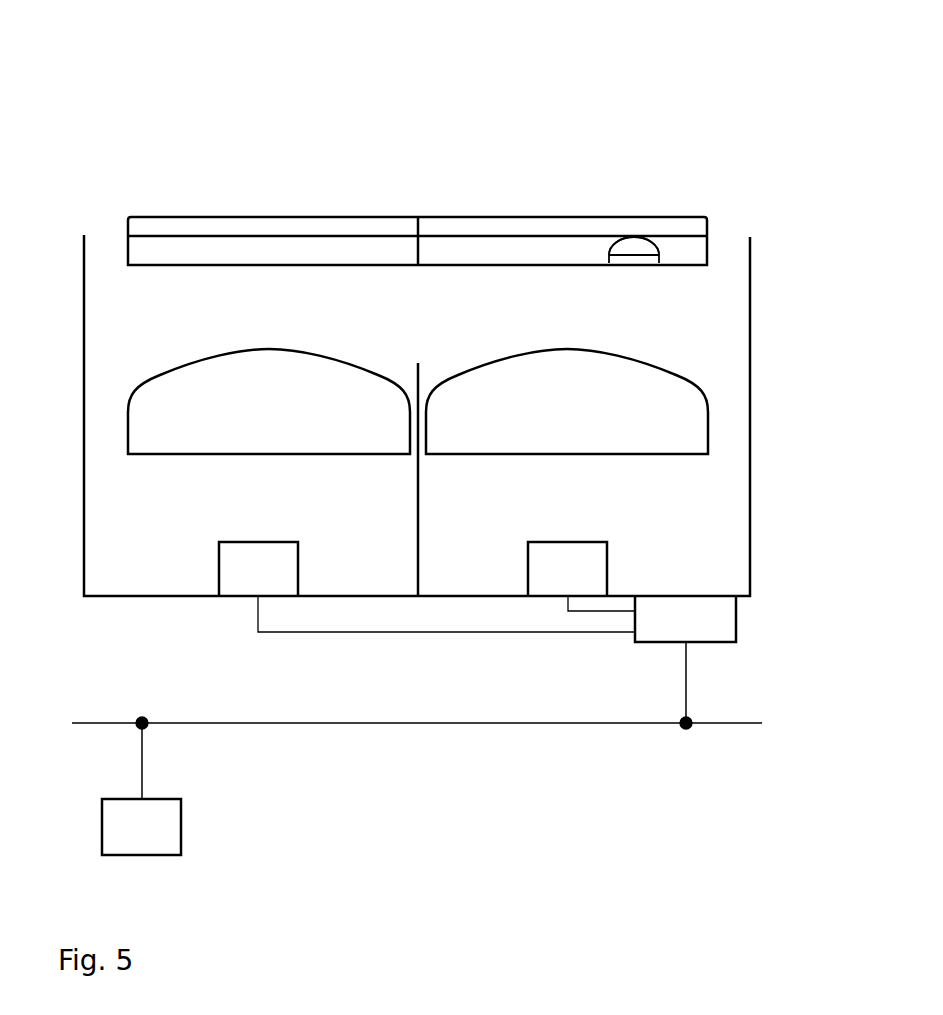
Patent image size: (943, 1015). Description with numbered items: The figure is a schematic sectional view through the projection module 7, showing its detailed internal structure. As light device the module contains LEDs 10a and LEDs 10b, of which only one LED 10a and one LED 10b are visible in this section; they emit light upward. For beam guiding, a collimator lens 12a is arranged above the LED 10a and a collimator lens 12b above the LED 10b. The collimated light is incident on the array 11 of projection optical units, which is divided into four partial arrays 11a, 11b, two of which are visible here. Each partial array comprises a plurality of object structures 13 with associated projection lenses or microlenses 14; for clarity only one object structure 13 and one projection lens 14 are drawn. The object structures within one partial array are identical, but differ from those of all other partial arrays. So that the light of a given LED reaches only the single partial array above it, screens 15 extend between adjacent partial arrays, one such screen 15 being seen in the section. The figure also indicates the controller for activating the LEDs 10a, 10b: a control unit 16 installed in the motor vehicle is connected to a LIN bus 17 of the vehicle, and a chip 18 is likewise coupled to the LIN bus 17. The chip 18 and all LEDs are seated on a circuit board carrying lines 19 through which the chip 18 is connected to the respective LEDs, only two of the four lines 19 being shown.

The projection module 7 is at (630, 106).
The LED 10a is at (219, 542).
The LED 10b is at (607, 542).
The array 11 is at (127, 250).
The partial array 11a is at (273, 217).
The partial array 11b is at (563, 217).
The collimator lens 12a is at (173, 363).
The collimator lens 12b is at (472, 365).
The object structure 13 is at (645, 263).
The projection lens 14 is at (657, 243).
The screen 15 is at (422, 527).
The control unit 16 is at (181, 830).
The LIN bus 17 is at (448, 724).
The chip 18 is at (738, 618).
The lines 19 is at (333, 632).